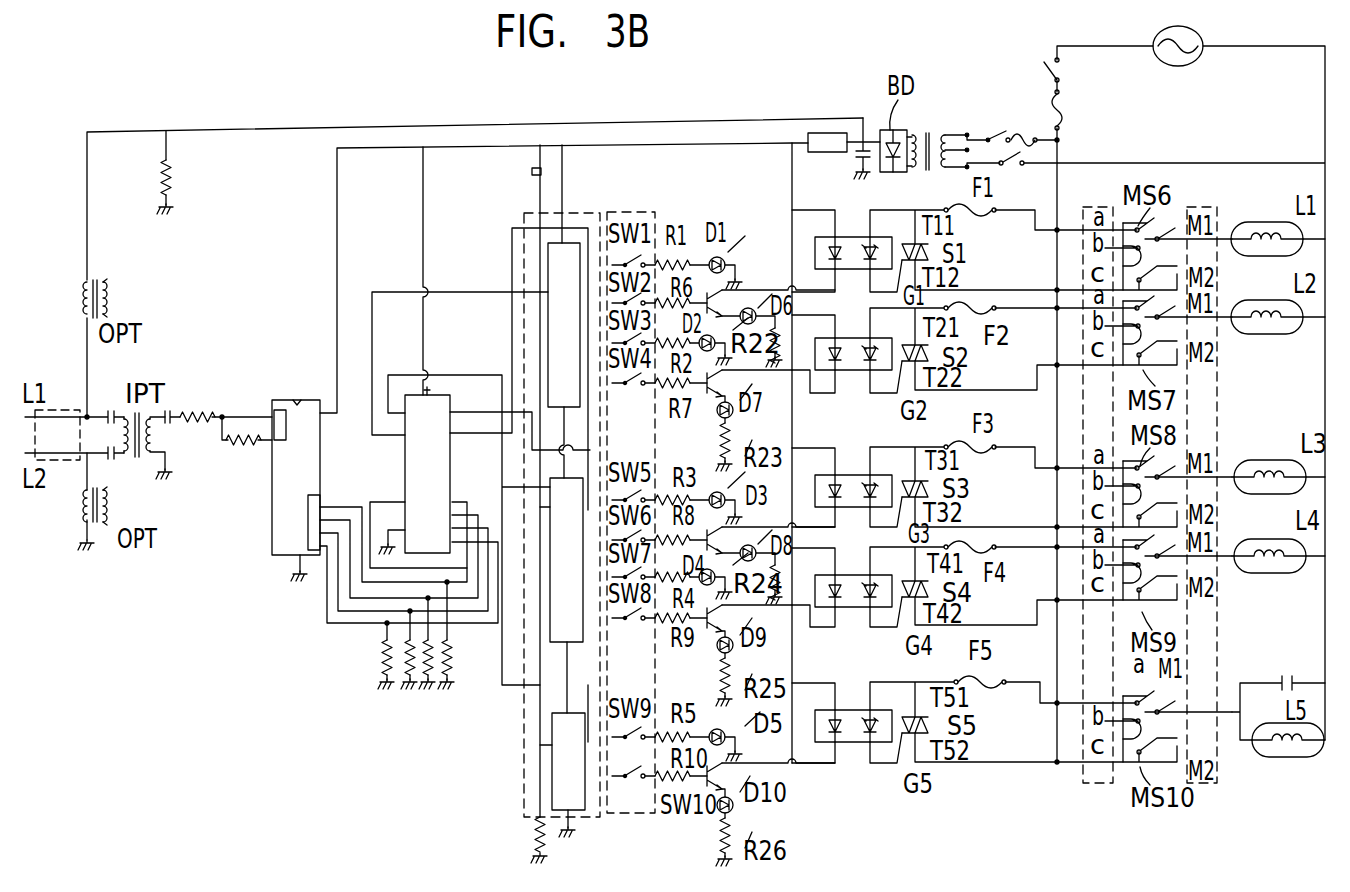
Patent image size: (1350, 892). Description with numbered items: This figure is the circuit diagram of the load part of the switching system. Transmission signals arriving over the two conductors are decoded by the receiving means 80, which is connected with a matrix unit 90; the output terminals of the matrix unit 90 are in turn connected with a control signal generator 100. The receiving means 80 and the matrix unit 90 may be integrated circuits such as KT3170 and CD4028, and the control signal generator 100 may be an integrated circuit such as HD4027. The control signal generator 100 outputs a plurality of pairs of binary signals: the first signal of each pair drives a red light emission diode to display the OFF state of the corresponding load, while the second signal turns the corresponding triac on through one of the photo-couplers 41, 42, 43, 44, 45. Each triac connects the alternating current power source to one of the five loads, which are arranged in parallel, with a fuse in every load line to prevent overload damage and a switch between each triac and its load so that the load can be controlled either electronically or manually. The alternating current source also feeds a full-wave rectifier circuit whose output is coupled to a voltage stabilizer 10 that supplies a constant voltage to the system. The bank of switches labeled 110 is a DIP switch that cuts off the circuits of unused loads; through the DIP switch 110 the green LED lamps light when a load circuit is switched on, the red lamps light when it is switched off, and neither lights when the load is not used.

The voltage stabilizer 10 is at (832, 130).
The photo-coupler 41 is at (856, 235).
The photo-coupler 42 is at (862, 372).
The photo-coupler 43 is at (857, 475).
The photo-coupler 44 is at (856, 608).
The photo-coupler 45 is at (856, 744).
The receiving means 80 is at (296, 477).
The matrix unit 90 is at (427, 470).
The control signal generator 100 is at (524, 797).
The DIP switch 110 is at (632, 820).